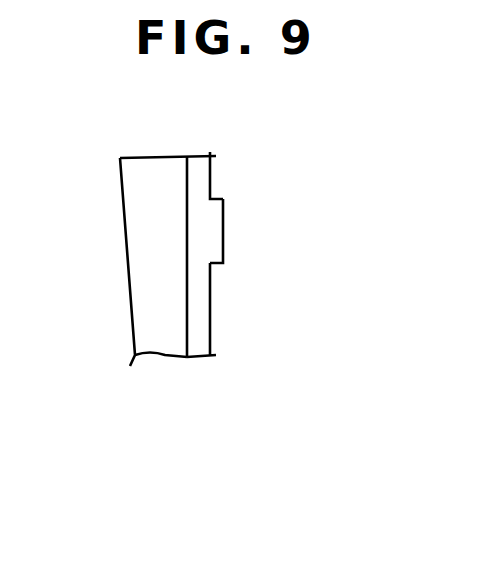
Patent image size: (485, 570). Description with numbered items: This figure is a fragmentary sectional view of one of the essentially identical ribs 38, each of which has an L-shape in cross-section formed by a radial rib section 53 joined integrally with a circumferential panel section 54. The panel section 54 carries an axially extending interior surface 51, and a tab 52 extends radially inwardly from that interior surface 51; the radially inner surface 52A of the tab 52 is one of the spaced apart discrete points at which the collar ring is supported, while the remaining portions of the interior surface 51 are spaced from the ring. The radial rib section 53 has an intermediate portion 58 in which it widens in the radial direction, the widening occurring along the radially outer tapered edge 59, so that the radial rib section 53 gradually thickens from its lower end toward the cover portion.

The rib 38 is at (158, 362).
The interior surface 51 is at (212, 312).
The tab 52 is at (222, 195).
The radially inner surface 52A is at (223, 232).
The radial rib section 53 is at (160, 157).
The panel section 54 is at (195, 153).
The intermediate portion 58 is at (177, 231).
The radially outer tapered edge 59 is at (128, 292).